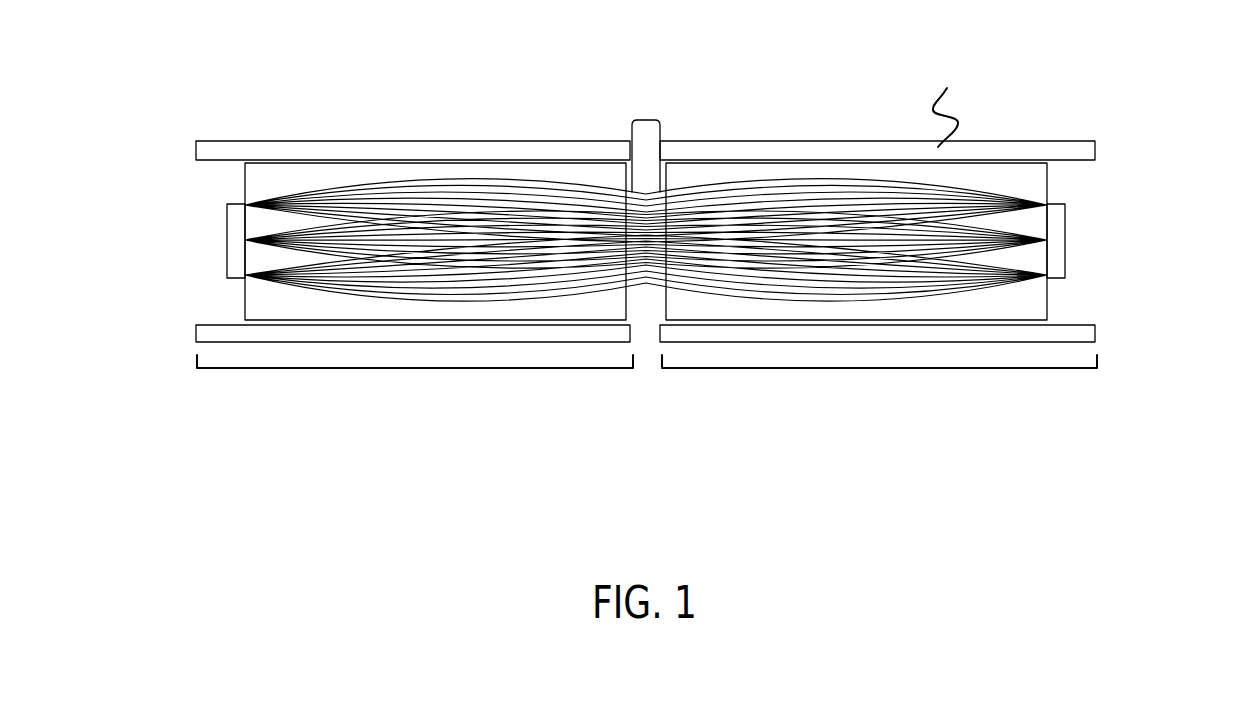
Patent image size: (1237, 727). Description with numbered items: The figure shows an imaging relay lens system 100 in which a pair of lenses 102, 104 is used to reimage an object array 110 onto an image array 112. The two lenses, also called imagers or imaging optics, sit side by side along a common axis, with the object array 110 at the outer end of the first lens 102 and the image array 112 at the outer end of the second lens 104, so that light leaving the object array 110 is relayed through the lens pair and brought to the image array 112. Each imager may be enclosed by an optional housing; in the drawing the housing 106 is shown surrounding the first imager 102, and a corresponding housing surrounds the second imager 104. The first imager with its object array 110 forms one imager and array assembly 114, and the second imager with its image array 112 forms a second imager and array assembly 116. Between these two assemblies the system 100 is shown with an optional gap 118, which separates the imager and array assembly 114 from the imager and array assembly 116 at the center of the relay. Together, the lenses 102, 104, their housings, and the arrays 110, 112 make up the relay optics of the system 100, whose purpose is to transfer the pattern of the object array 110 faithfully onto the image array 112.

The system 100 is at (215, 104).
The lens 102 is at (240, 305).
The lens 104 is at (1047, 298).
The housing 106 is at (323, 152).
The object array 110 is at (226, 260).
The image array 112 is at (1062, 260).
The imager and array assembly 114 is at (415, 368).
The imager and array assembly 116 is at (880, 368).
The gap 118 is at (645, 118).